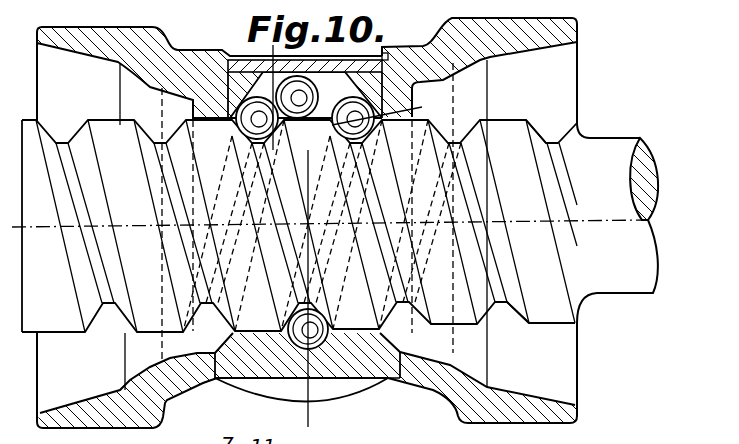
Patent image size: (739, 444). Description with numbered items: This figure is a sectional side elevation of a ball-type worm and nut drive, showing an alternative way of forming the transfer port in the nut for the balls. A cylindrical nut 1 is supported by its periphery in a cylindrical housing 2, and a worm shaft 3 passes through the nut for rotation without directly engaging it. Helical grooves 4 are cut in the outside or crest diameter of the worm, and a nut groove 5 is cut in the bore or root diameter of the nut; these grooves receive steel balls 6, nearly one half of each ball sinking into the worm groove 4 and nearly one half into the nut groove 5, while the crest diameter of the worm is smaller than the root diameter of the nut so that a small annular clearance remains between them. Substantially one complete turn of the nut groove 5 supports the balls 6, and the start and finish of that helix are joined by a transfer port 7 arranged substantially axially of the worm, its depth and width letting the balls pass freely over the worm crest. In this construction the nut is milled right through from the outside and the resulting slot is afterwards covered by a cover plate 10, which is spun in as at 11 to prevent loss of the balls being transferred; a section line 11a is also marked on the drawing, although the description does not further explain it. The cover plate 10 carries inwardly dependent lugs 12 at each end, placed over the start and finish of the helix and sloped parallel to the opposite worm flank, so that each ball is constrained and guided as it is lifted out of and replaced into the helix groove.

The cylindrical nut 1 is at (47, 95).
The cylindrical housing 2 is at (369, 222).
The worm shaft 3 is at (588, 150).
The helical grooves 4 is at (466, 127).
The nut groove 5 is at (218, 380).
The steel balls 6 is at (259, 134).
The transfer port 7 is at (413, 100).
The cover plate 10 is at (384, 58).
The spun-in securing 11 is at (392, 56).
The center line 11a is at (273, 45).
The inwardly dependent lugs 12 is at (312, 86).